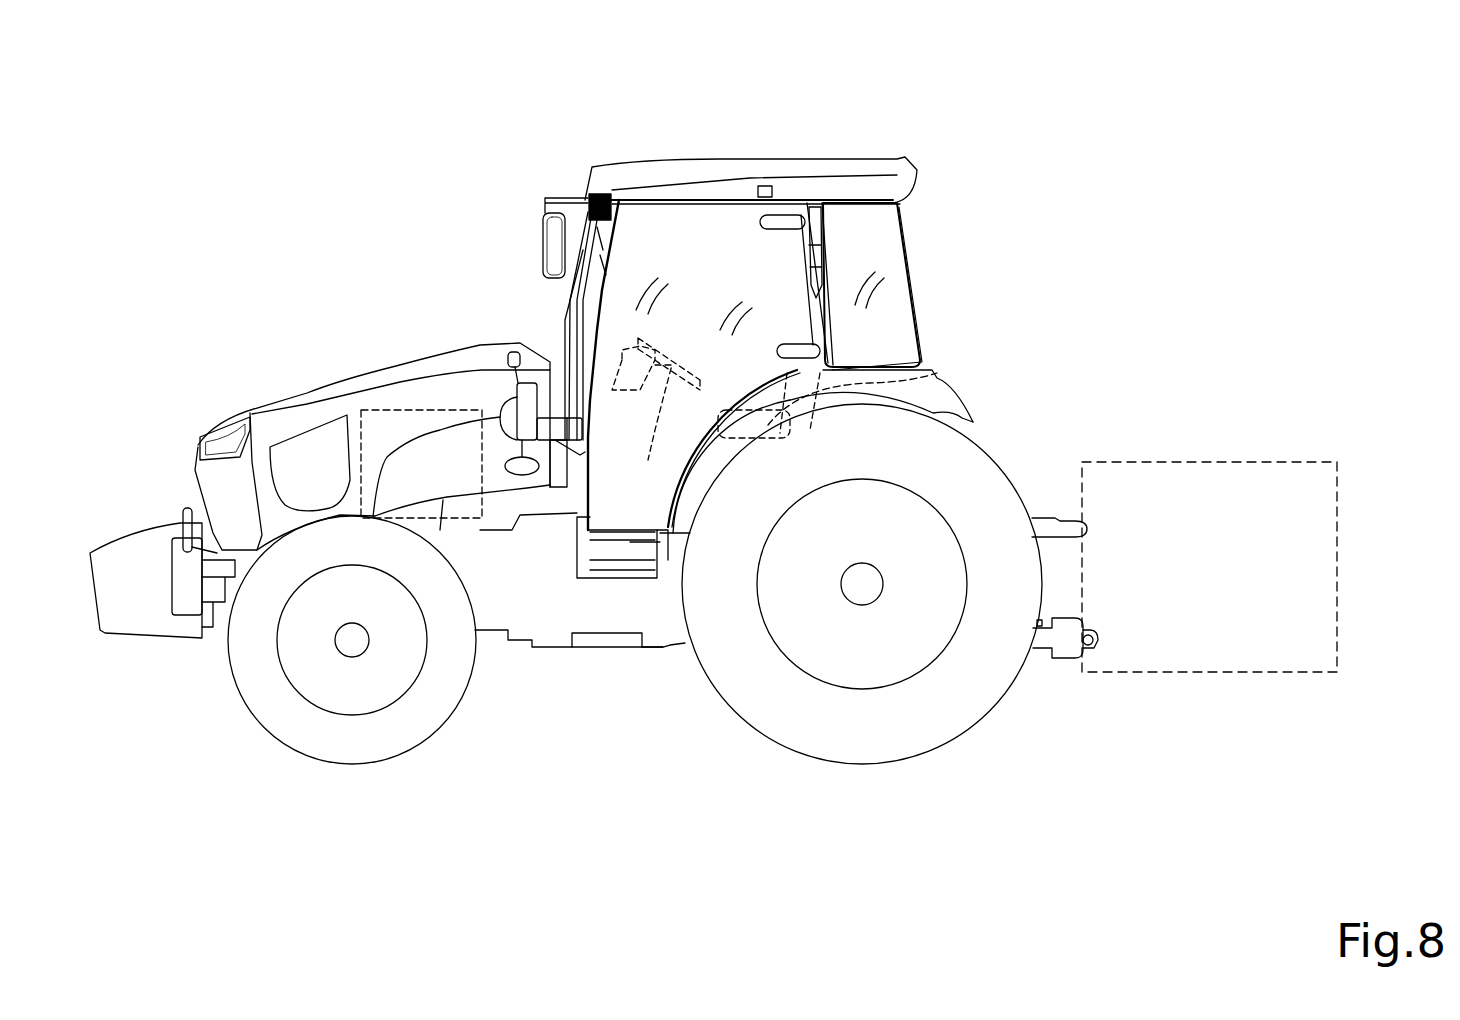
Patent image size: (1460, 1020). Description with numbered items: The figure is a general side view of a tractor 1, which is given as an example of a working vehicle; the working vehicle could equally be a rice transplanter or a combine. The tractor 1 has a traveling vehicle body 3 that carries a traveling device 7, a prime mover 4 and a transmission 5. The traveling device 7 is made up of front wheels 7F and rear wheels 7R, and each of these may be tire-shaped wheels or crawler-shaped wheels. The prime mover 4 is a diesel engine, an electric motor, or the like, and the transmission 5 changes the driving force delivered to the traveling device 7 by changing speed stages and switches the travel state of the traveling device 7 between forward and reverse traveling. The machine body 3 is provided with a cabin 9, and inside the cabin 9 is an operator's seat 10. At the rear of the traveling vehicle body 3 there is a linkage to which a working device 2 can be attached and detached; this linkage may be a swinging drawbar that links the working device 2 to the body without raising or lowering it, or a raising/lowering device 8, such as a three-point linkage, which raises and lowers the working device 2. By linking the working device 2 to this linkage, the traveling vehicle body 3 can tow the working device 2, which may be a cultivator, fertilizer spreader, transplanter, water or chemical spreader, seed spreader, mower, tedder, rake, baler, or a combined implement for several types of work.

The tractor 1 is at (921, 121).
The working device 2 is at (1177, 460).
The traveling vehicle body 3 is at (608, 670).
The prime mover 4 is at (400, 408).
The transmission 5 is at (653, 610).
The traveling device 7 is at (440, 788).
The front wheel 7F is at (422, 715).
The rear wheel 7R is at (775, 716).
The raising/lowering device 8 is at (1058, 500).
The cabin 9 is at (928, 261).
The operator's seat 10 is at (937, 373).